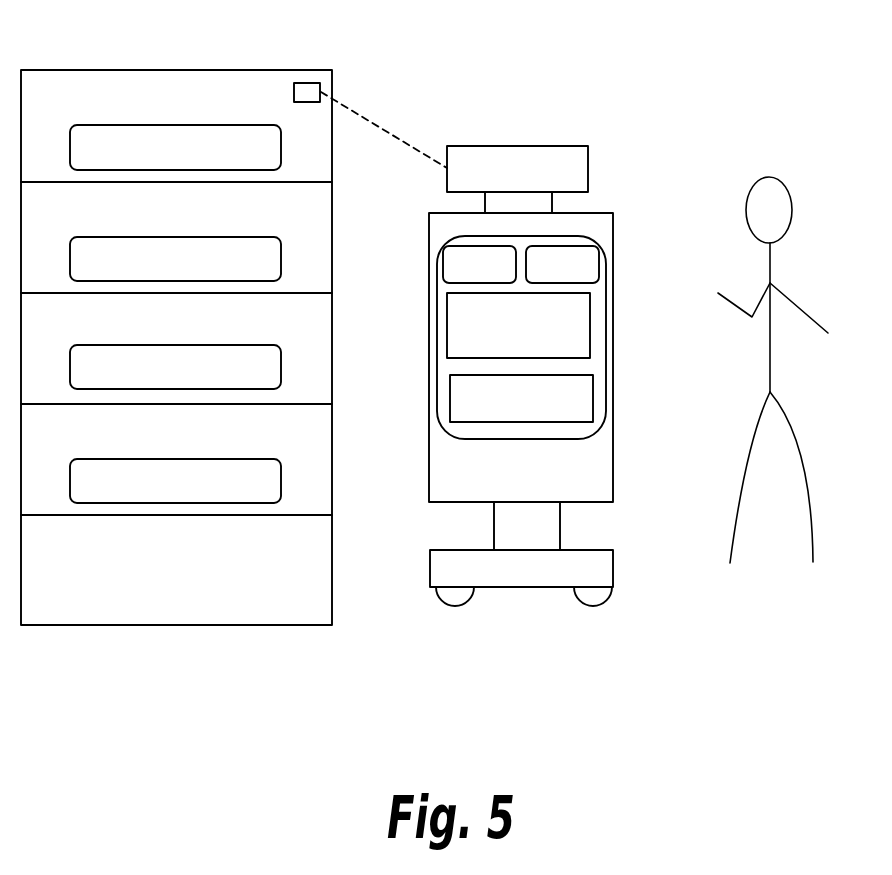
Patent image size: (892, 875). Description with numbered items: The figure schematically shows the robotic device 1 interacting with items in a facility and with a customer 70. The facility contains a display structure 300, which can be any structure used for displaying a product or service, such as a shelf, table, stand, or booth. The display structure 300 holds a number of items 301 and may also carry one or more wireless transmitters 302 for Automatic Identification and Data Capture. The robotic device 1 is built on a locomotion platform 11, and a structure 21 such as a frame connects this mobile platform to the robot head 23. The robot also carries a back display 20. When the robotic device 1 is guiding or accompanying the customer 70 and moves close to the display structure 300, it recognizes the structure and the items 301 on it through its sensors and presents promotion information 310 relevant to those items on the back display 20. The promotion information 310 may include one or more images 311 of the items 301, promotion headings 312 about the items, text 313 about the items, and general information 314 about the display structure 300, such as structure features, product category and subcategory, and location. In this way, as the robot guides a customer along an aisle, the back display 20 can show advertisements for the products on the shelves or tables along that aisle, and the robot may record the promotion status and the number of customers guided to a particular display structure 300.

The robotic device 1 is at (615, 158).
The locomotion platform 11 is at (538, 582).
The back display 20 is at (602, 230).
The structure 21 is at (538, 536).
The robot head 23 is at (538, 184).
The customer 70 is at (772, 268).
The display structure 300 is at (60, 73).
The items 301 is at (192, 160).
The wireless transmitters 302 is at (303, 90).
The promotion information 310 is at (543, 477).
The images 311 is at (497, 277).
The promotion headings 312 is at (582, 327).
The text 313 is at (583, 277).
The general information 314 is at (539, 412).